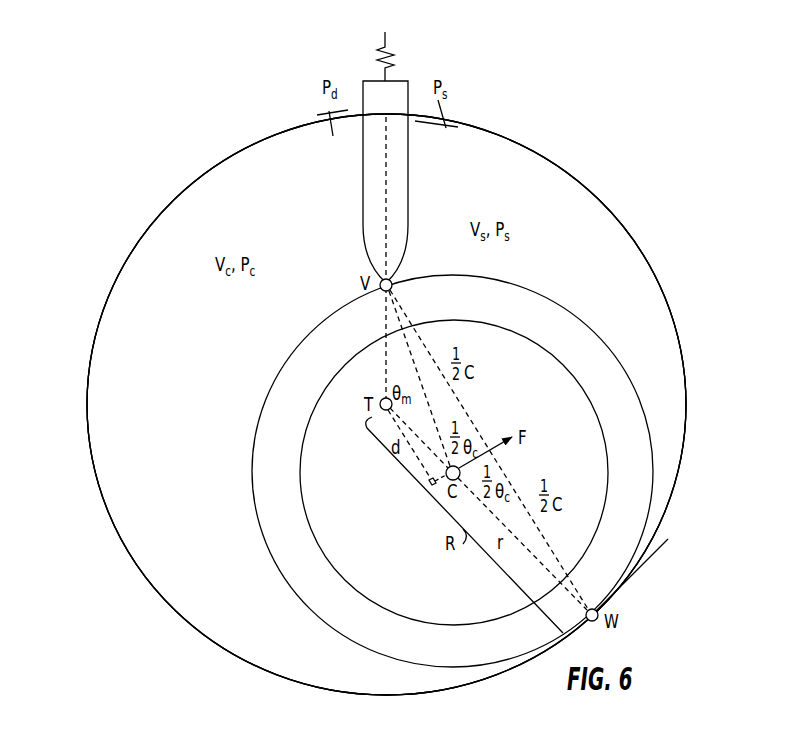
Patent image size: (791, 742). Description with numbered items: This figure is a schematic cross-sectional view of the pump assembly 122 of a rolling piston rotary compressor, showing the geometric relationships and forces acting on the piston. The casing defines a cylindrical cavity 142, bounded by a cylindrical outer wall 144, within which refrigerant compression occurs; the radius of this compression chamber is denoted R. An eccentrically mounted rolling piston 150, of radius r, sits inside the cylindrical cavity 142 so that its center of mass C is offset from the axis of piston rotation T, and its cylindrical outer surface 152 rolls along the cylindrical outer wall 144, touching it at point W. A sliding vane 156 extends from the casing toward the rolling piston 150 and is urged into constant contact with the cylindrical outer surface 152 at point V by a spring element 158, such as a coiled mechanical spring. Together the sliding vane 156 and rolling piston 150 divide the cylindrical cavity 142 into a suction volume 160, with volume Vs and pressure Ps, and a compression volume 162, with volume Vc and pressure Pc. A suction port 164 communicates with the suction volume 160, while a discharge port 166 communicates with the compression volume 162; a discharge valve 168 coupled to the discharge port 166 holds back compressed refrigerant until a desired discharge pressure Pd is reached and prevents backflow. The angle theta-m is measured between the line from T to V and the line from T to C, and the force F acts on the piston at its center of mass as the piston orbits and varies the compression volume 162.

The pump assembly 122 is at (100, 153).
The cylindrical cavity 142 is at (168, 533).
The cylindrical outer wall 144 is at (668, 292).
The rolling piston 150 is at (377, 560).
The cylindrical outer surface 152 is at (627, 370).
The sliding vane 156 is at (387, 50).
The spring element 158 is at (400, 211).
The suction volume 160 is at (599, 274).
The compression volume 162 is at (194, 349).
The suction port 164 is at (437, 133).
The discharge port 166 is at (318, 133).
The discharge valve 168 is at (325, 113).